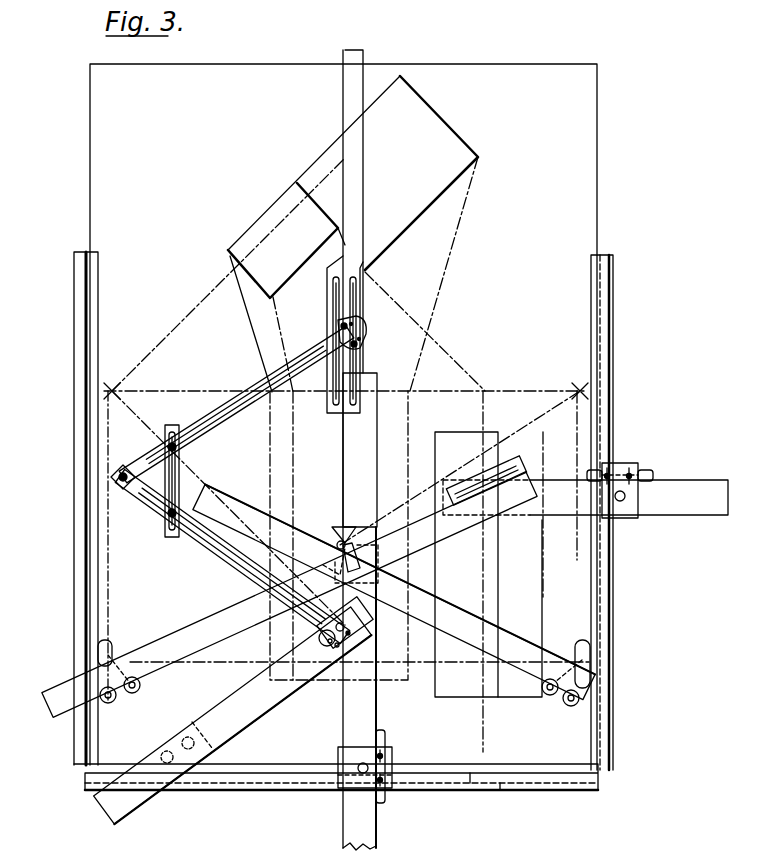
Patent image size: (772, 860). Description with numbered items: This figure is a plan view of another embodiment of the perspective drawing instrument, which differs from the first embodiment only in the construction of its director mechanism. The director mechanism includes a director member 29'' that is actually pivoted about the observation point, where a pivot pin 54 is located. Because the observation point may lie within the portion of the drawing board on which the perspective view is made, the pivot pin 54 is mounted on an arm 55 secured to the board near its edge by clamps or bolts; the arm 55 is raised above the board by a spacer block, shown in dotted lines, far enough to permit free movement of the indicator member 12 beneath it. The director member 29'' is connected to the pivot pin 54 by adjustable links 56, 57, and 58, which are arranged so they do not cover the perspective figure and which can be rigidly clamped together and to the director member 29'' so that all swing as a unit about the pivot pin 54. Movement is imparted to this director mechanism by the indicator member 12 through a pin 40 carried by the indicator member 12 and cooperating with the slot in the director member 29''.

The indicator member 12 is at (367, 712).
The director member 29'' is at (353, 187).
The pin 40 is at (347, 390).
The pivot pin 54 is at (354, 632).
The arm 55 is at (216, 707).
The adjustable link 56 is at (222, 402).
The adjustable link 57 is at (180, 449).
The adjustable link 58 is at (213, 553).